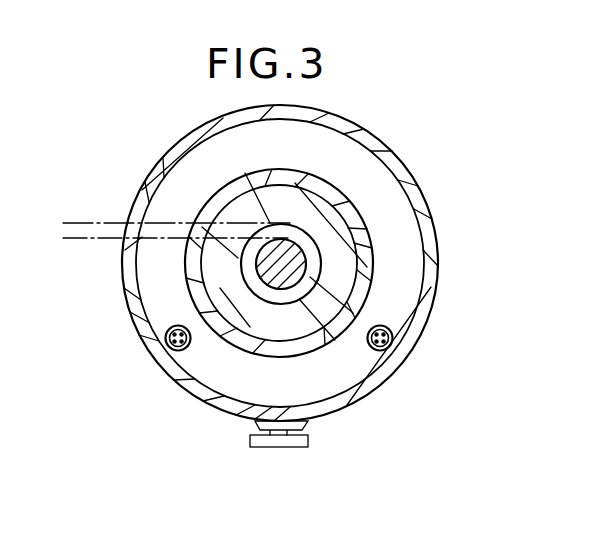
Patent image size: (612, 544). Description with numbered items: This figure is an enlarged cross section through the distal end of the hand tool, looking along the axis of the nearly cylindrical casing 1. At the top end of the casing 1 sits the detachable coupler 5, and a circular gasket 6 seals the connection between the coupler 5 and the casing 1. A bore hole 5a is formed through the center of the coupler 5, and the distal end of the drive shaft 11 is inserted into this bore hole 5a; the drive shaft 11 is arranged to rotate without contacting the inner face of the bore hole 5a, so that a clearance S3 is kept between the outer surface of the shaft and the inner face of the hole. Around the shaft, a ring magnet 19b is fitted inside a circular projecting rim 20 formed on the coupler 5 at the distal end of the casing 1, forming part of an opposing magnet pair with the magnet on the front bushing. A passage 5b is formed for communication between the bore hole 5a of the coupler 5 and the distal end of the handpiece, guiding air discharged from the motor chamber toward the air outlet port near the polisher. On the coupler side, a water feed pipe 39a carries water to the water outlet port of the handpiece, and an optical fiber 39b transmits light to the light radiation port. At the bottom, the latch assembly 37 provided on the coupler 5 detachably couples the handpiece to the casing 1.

The casing 1 is at (185, 382).
The circular gasket 6 is at (397, 210).
The latch assembly 37 is at (270, 447).
The circular projecting rim 20 is at (267, 173).
The ring magnet 19b is at (335, 199).
The coupler 5 is at (224, 197).
The bore hole 5a is at (248, 267).
The passage 5b is at (317, 245).
The drive shaft 11 is at (289, 237).
The water feed pipe 39a is at (385, 326).
The optical fiber 39b is at (173, 325).
The clearance S3 is at (85, 247).